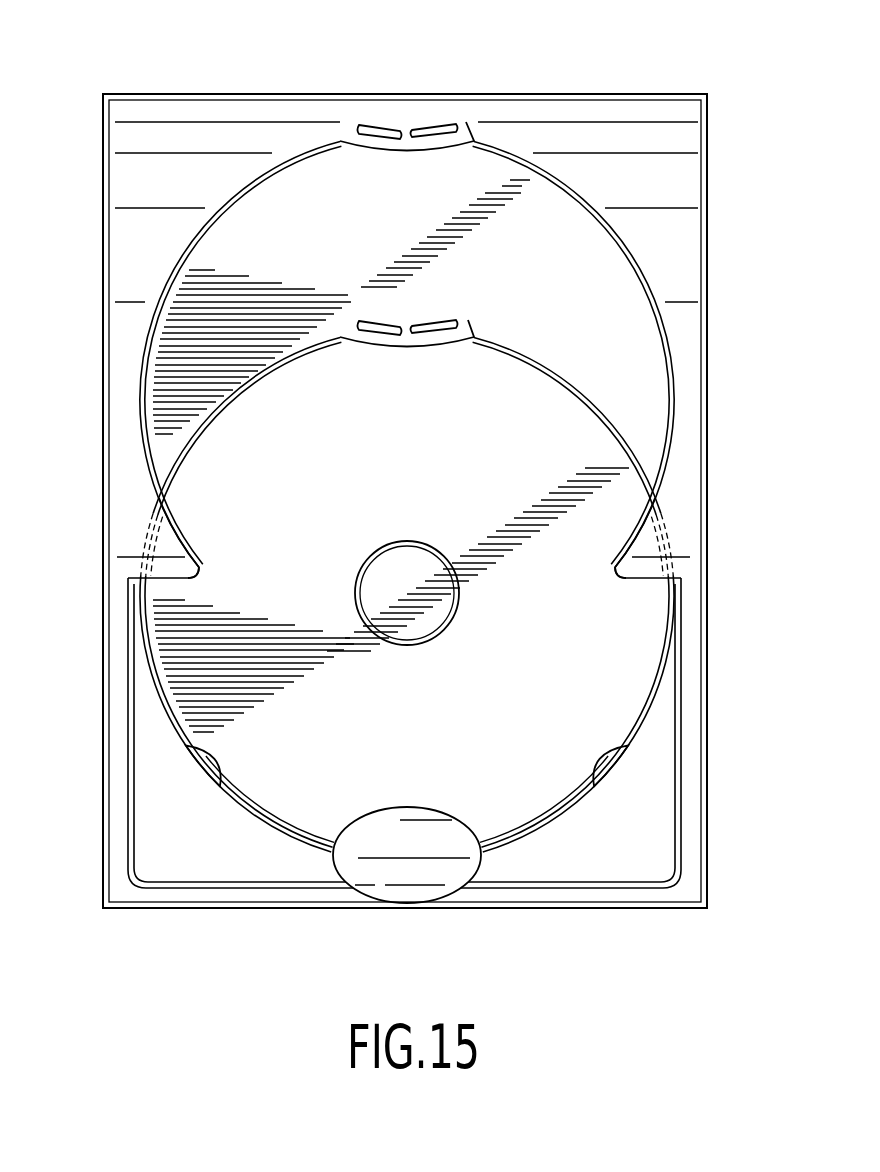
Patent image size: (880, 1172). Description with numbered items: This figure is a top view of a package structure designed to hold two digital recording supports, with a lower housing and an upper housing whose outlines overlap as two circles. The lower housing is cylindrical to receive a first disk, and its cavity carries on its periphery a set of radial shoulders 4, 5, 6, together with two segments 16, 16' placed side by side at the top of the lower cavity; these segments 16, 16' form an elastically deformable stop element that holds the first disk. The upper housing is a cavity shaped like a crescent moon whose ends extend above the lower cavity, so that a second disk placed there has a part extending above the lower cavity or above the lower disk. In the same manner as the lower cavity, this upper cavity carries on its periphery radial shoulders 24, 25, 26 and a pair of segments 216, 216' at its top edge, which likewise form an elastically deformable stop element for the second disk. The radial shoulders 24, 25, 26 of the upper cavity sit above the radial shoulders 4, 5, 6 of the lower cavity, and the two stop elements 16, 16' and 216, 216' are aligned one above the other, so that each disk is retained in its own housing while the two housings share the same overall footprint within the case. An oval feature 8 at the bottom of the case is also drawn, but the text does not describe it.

The radial shoulder 4 is at (463, 325).
The segment 16 is at (360, 291).
The segment 16' is at (456, 282).
The radial shoulder 24 is at (465, 128).
The segment 216 is at (363, 83).
The segment 216' is at (466, 75).
The radial shoulder 26 is at (175, 530).
The radial shoulder 25 is at (633, 528).
The radial shoulder 6 is at (208, 763).
The radial shoulder 5 is at (604, 758).
The finger recess 8 is at (427, 882).